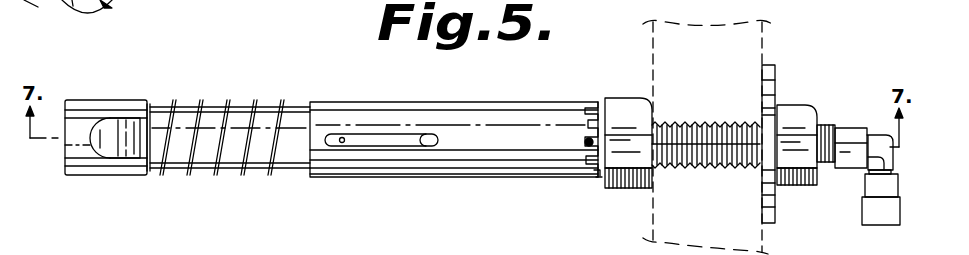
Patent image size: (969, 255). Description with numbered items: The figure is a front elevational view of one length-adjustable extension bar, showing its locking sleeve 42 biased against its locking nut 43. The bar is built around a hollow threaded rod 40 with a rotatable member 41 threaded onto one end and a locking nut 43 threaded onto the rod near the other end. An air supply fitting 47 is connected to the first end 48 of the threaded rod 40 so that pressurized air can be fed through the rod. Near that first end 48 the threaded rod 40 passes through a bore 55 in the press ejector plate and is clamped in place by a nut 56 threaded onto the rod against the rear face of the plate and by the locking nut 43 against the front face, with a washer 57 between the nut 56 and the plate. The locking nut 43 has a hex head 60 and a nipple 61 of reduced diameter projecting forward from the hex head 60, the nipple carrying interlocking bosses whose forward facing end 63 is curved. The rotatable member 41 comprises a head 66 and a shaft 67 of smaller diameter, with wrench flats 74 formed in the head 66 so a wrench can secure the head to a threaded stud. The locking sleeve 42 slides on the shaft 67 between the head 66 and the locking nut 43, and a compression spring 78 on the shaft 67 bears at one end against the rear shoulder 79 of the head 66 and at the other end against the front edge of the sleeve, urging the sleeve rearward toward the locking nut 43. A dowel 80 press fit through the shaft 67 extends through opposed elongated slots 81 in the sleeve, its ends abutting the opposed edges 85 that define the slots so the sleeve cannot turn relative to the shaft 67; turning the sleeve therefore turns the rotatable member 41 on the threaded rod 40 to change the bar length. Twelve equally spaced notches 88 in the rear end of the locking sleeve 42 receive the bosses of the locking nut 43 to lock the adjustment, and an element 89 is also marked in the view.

The threaded rod 40 is at (726, 168).
The rotatable member 41 is at (118, 94).
The locking sleeve 42 is at (334, 102).
The locking nut 43 is at (624, 98).
The air supply fitting 47 is at (877, 226).
The first end 48 is at (822, 127).
The bore 55 is at (715, 125).
The nut 56 is at (796, 186).
The washer 57 is at (776, 62).
The hex head 60 is at (629, 188).
The nipple 61 is at (599, 186).
The forward facing end 63 is at (585, 140).
The head 66 is at (81, 100).
The shaft 67 is at (233, 103).
The wrench flats 74 is at (122, 150).
The compression spring 78 is at (238, 172).
The shoulder 79 is at (148, 100).
The dowel 80 is at (340, 144).
The elongated slots 81 is at (418, 148).
The opposed edges 85 is at (372, 142).
The notches 88 is at (598, 108).
The tab 89 is at (594, 180).